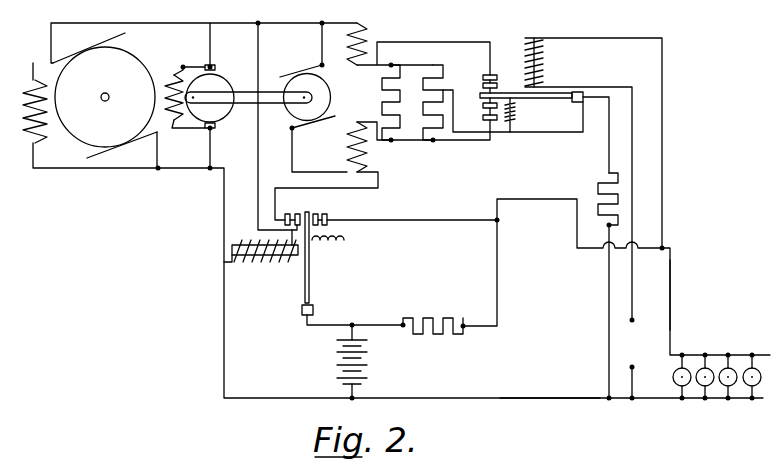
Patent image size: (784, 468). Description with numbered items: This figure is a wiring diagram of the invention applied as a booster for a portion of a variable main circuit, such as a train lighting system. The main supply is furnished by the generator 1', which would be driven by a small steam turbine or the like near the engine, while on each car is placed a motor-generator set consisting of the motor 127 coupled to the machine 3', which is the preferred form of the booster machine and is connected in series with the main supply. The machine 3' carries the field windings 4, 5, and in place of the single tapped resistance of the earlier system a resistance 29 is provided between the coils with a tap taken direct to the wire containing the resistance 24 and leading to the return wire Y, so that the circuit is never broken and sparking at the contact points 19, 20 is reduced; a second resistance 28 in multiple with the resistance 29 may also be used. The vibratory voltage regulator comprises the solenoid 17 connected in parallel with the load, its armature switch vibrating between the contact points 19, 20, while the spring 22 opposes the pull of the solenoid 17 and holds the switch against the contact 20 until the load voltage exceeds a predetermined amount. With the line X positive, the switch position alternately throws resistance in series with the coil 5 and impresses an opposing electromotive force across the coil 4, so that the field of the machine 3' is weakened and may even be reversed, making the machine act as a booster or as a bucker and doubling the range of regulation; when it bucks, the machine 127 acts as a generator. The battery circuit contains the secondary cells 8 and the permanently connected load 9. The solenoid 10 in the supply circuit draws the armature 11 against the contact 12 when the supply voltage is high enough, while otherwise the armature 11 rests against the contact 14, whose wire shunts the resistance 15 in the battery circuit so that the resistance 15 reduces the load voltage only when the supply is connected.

The generator 1' is at (89, 97).
The motor 127 is at (225, 86).
The machine 3' is at (316, 96).
The field winding 4 is at (367, 34).
The field winding 5 is at (347, 143).
The second resistance 28 is at (382, 93).
The resistance 29 is at (423, 103).
The contact point 19 is at (501, 84).
The contact point 20 is at (483, 106).
The spring 22 is at (515, 115).
The solenoid 17 is at (543, 63).
The resistance 24 is at (598, 184).
The contact 12 is at (296, 210).
The contact 14 is at (319, 214).
The armature 11 is at (309, 277).
The solenoid 10 is at (261, 260).
The secondary cells 8 is at (337, 362).
The resistance 15 is at (440, 335).
The load or translating devices 9 is at (705, 355).
The positive side of line X is at (670, 288).
The main return circuit Y is at (557, 399).